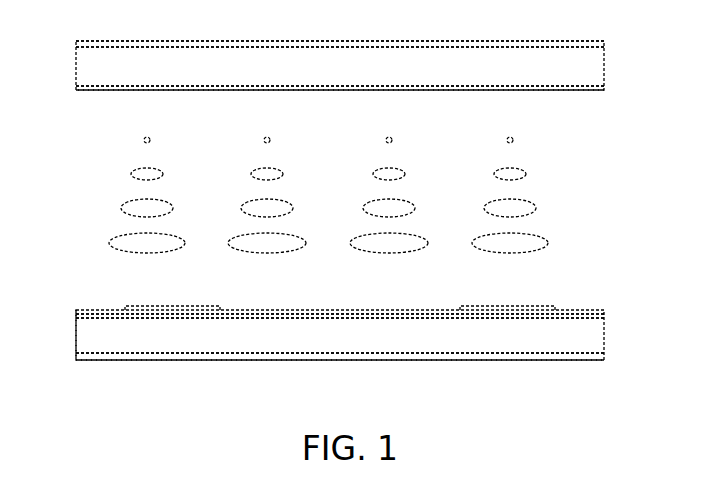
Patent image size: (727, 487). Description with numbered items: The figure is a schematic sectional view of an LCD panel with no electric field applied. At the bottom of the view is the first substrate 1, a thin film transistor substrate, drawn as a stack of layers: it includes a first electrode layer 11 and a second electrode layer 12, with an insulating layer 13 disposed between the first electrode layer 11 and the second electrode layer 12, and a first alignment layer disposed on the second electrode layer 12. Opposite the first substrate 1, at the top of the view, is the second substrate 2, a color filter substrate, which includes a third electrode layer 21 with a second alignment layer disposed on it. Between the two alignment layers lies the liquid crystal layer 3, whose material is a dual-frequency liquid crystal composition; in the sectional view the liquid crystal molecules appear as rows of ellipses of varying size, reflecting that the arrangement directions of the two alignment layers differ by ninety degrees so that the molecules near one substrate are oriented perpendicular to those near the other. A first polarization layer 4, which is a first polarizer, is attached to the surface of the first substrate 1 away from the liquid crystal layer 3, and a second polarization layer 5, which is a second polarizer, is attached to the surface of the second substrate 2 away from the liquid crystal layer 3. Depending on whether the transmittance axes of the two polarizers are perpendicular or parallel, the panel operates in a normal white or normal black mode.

The first substrate 1 is at (603, 347).
The first electrode layer 11 is at (604, 320).
The second electrode layer 12 is at (555, 307).
The insulating layer 13 is at (75, 318).
The second substrate 2 is at (598, 75).
The third electrode layer 21 is at (604, 90).
The liquid crystal layer 3 is at (538, 242).
The first polarization layer 4 is at (583, 360).
The second polarization layer 5 is at (604, 41).